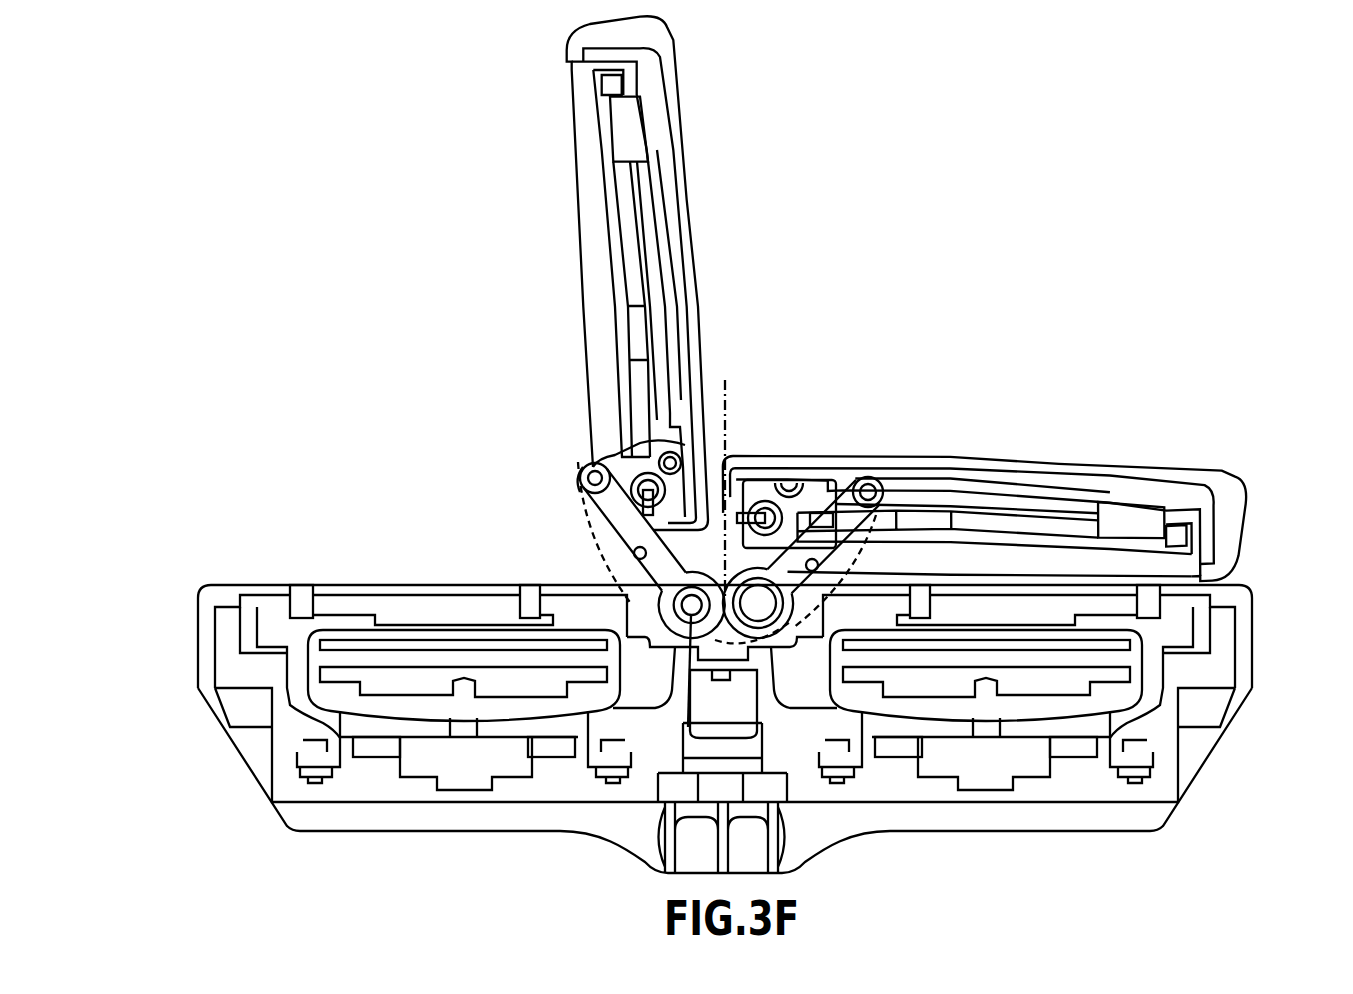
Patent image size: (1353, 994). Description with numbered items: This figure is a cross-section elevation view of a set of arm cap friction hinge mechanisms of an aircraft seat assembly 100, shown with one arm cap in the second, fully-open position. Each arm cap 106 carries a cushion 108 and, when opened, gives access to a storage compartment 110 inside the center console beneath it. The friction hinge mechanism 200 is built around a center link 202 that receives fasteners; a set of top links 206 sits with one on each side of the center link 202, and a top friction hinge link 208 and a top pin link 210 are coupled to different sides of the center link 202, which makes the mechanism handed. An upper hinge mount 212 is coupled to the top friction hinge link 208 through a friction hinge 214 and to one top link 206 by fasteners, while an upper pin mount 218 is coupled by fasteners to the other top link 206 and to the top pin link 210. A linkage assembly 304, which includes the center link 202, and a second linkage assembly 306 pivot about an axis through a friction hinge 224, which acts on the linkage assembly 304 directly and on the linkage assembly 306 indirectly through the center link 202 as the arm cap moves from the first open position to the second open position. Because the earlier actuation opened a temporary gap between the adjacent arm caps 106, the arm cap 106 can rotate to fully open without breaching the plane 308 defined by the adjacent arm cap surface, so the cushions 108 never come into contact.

The aircraft seat assembly 100 is at (270, 95).
The arm cap 106 is at (290, 446).
The cushion 108 is at (583, 248).
The storage compartment 110 is at (305, 690).
The friction hinge mechanism 200 is at (727, 340).
The center link 202 is at (620, 523).
The top link 206 is at (628, 466).
The top friction hinge link 208 is at (632, 484).
The top pin link 210 is at (800, 515).
The upper hinge mount 212 is at (672, 490).
The friction hinge 214 is at (634, 555).
The upper pin mount 218 is at (768, 500).
The friction hinge 224 is at (691, 612).
The linkage assembly 304 is at (580, 498).
The linkage assembly 306 is at (895, 478).
The plane 308 is at (727, 430).